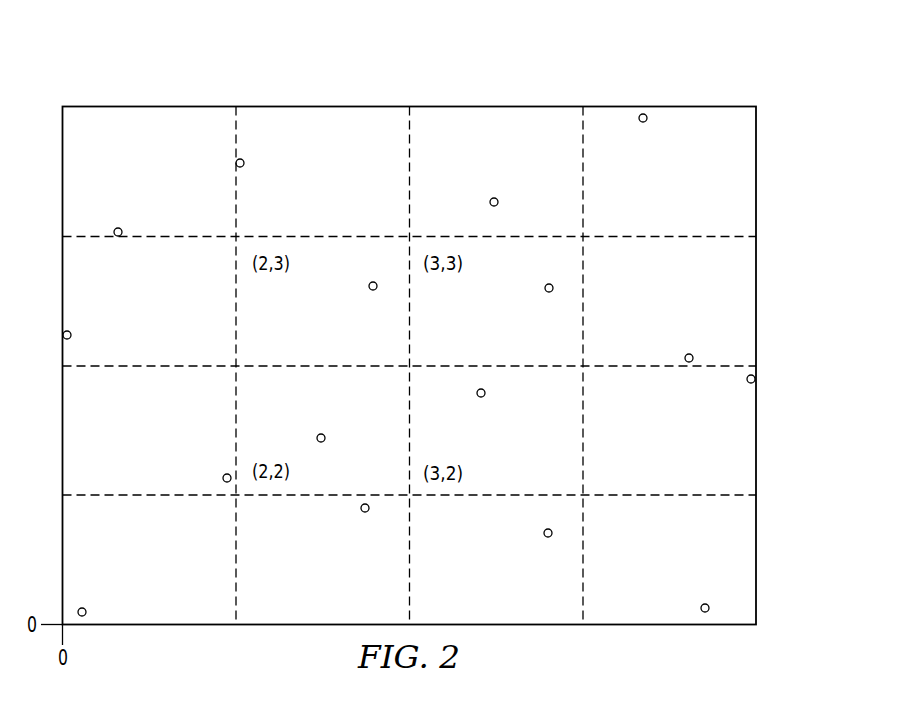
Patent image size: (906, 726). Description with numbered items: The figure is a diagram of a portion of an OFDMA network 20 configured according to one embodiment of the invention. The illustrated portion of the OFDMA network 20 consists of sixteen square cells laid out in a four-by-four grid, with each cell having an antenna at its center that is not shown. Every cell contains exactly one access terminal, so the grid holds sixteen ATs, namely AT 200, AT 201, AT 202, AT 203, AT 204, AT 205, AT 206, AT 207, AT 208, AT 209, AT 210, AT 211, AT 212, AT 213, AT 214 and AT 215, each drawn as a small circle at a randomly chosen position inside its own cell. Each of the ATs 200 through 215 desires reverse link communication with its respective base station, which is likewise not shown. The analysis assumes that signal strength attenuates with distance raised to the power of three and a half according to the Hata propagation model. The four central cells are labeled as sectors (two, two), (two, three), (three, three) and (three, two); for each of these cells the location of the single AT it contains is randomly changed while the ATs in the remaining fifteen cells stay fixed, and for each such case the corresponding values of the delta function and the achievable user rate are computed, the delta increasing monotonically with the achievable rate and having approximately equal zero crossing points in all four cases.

The OFDMA network 20 is at (261, 97).
The access terminal 200 is at (86, 611).
The access terminal 201 is at (223, 477).
The access terminal 202 is at (71, 334).
The access terminal 203 is at (122, 231).
The access terminal 204 is at (244, 162).
The access terminal 205 is at (369, 288).
The access terminal 206 is at (325, 437).
The access terminal 207 is at (361, 510).
The access terminal 208 is at (544, 535).
The access terminal 209 is at (485, 395).
The access terminal 210 is at (545, 290).
The access terminal 211 is at (498, 201).
The access terminal 212 is at (644, 122).
The access terminal 213 is at (690, 354).
The access terminal 214 is at (747, 381).
The access terminal 215 is at (706, 604).